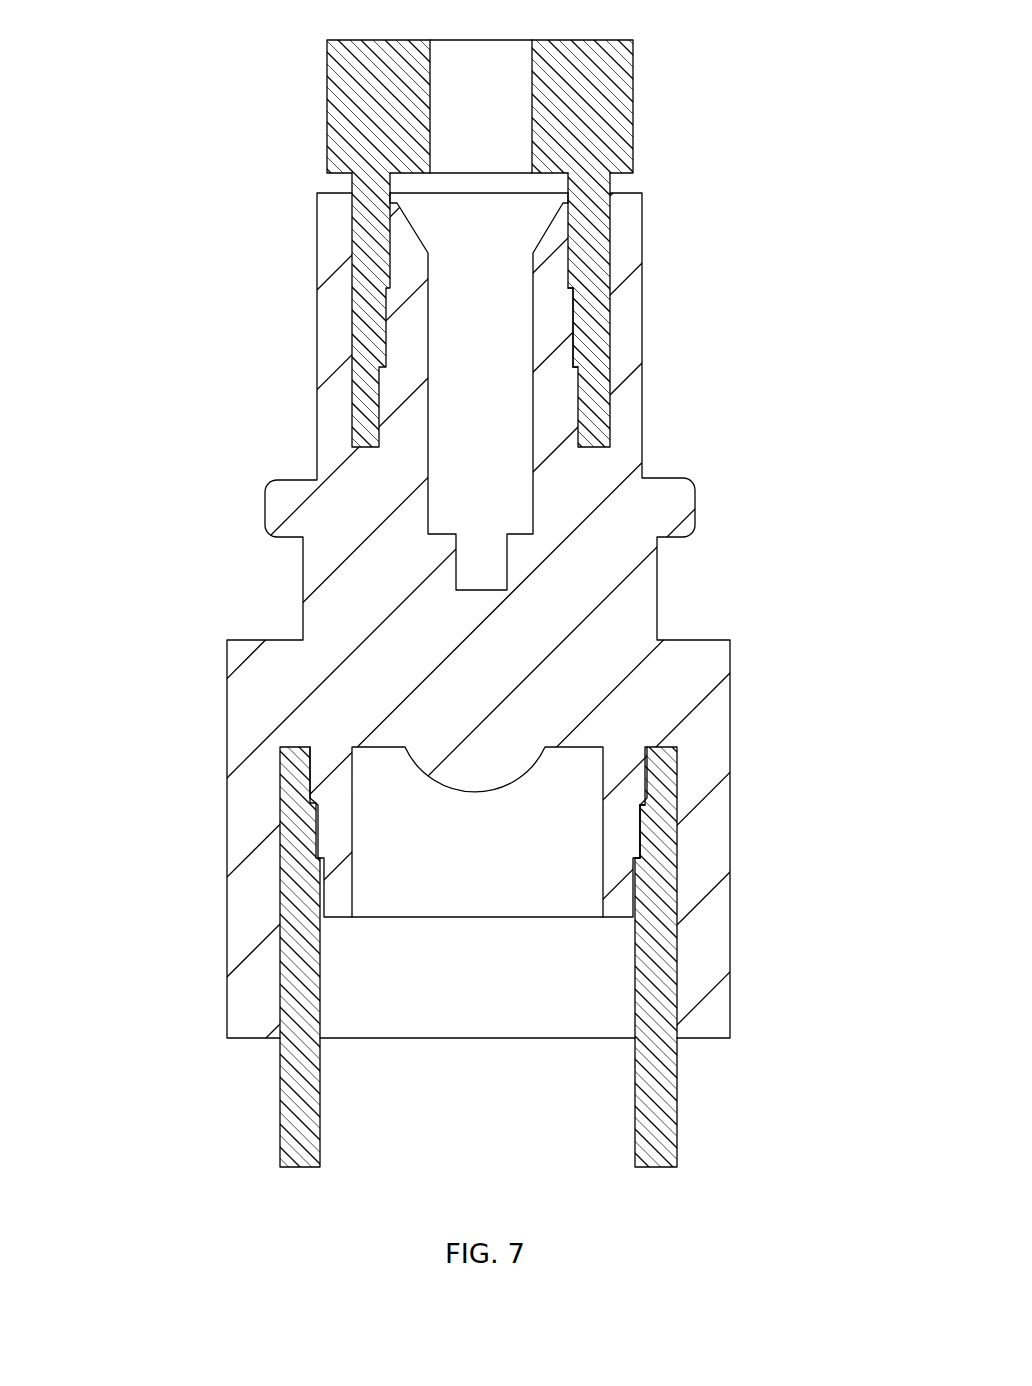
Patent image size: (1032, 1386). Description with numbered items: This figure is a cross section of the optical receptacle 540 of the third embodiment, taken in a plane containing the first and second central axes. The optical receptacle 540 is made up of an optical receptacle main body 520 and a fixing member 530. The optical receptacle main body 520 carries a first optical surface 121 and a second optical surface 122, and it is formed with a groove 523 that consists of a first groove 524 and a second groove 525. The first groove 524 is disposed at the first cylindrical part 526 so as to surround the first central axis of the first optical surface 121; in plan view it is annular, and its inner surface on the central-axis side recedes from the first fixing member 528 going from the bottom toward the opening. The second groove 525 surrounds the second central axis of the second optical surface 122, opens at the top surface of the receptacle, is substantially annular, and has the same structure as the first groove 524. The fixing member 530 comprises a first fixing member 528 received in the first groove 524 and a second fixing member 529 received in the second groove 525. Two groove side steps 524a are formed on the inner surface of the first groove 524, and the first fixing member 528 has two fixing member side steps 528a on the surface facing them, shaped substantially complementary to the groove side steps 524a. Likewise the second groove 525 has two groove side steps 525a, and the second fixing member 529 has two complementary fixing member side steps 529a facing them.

The optical receptacle 540 is at (687, 91).
The second optical surface 122 is at (487, 587).
The first optical surface 121 is at (533, 768).
The optical receptacle main body 520 is at (227, 1003).
The groove 523 is at (212, 691).
The second groove 525 is at (356, 428).
The first groove 524 is at (300, 773).
The first cylindrical part 526 is at (253, 912).
The fixing member 530 is at (740, 684).
The second fixing member 529 is at (598, 422).
The first fixing member 528 is at (650, 766).
The groove side step 525a is at (553, 292).
The fixing member side step 529a is at (600, 352).
The groove side step 524a is at (630, 783).
The fixing member side step 528a is at (658, 873).